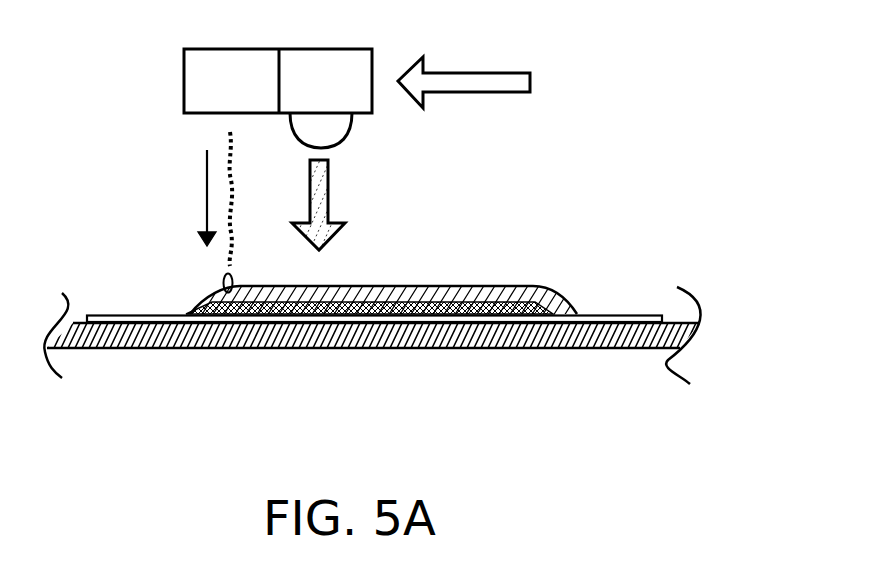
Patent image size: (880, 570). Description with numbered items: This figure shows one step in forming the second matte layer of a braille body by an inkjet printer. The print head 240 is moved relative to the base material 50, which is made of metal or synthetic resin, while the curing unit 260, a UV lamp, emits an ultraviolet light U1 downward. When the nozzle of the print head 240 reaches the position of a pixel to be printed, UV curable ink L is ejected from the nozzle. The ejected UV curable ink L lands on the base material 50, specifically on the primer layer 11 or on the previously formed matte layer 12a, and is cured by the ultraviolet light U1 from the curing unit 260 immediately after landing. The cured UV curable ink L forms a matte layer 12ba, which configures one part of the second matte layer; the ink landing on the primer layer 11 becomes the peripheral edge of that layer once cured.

The print head 240 is at (193, 82).
The curing unit 260 is at (348, 137).
The ultraviolet light U1 is at (330, 206).
The UV curable ink L is at (222, 286).
The matte layer 12ba is at (463, 287).
The matte layer 12a is at (277, 318).
The primer layer 11 is at (396, 324).
The base material 50 is at (458, 348).